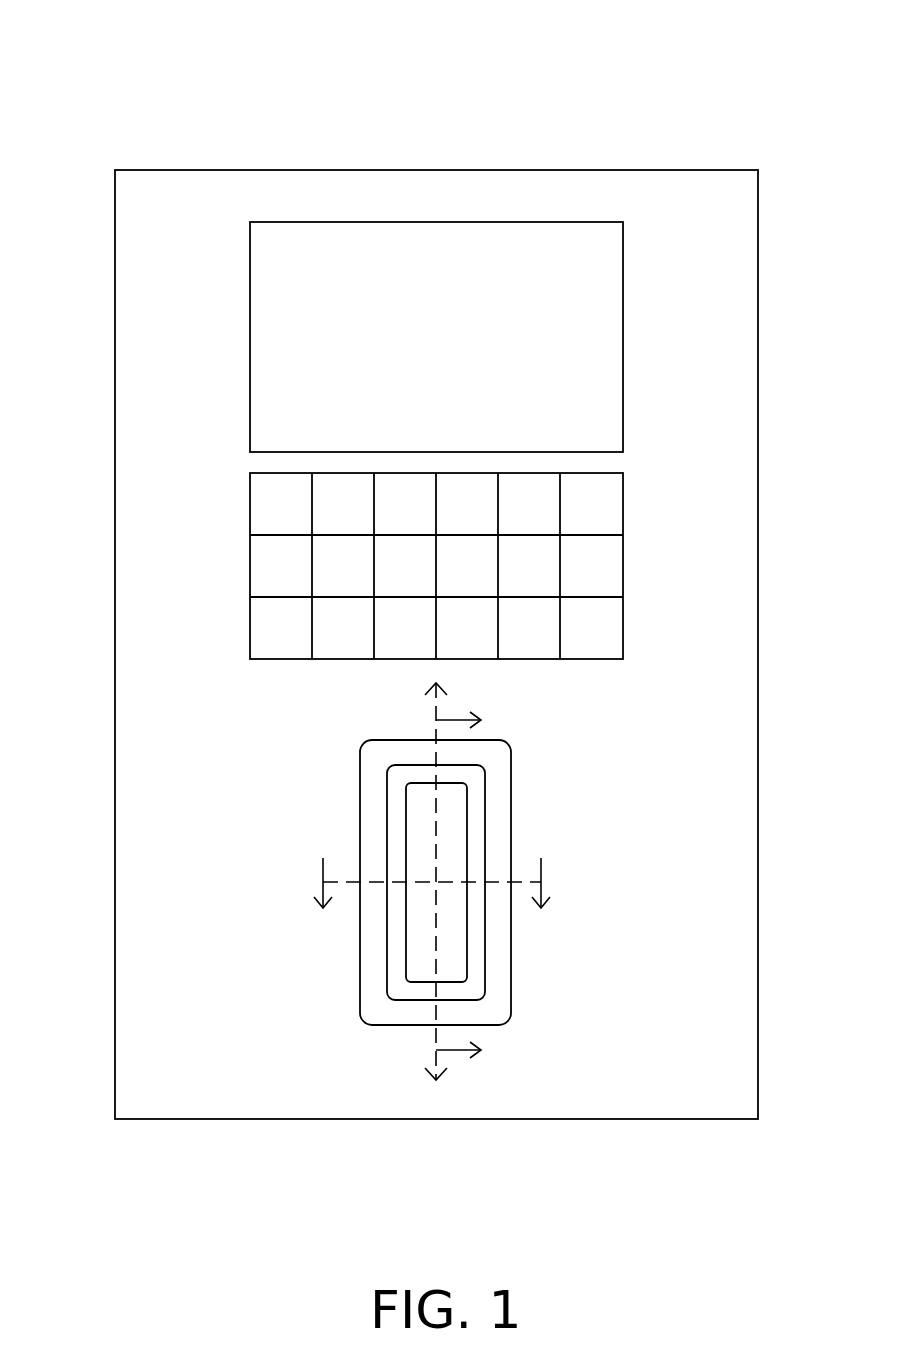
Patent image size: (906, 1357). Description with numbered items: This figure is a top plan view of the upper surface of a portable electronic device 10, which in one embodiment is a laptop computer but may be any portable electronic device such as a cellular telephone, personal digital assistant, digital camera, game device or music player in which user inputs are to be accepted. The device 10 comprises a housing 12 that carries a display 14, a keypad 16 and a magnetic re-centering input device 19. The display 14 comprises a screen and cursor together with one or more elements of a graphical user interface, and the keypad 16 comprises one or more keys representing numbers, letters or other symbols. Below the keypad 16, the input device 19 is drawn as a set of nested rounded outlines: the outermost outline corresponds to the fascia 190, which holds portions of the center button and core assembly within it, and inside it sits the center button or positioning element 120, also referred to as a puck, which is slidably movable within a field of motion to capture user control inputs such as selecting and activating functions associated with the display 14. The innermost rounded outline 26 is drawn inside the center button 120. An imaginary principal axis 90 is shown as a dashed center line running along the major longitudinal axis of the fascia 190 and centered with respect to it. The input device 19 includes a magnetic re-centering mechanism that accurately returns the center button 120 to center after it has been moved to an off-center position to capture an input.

The portable electronic device 10 is at (66, 105).
The housing 12 is at (685, 210).
The display 14 is at (395, 265).
The keypad 16 is at (277, 567).
The input device 19 is at (344, 763).
The key cap 26 is at (455, 960).
The imaginary principal axis 90 is at (436, 757).
The center button 120 is at (478, 814).
The fascia 190 is at (495, 764).